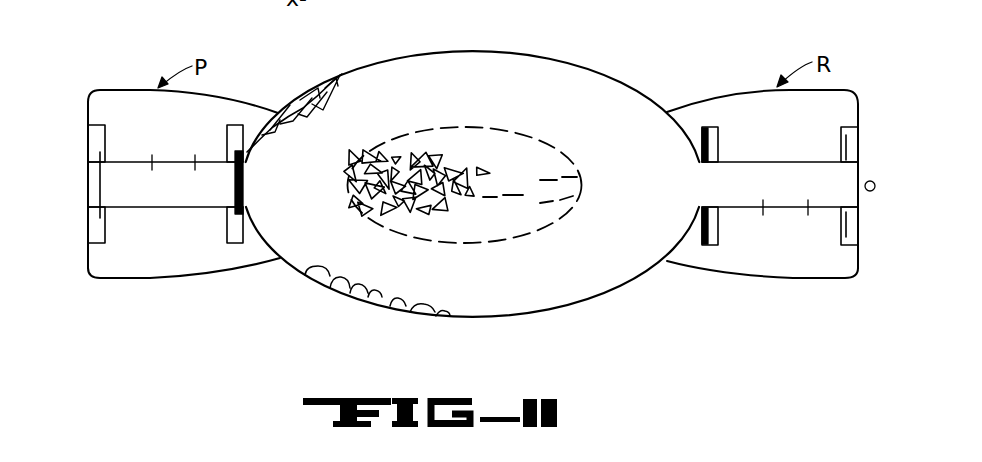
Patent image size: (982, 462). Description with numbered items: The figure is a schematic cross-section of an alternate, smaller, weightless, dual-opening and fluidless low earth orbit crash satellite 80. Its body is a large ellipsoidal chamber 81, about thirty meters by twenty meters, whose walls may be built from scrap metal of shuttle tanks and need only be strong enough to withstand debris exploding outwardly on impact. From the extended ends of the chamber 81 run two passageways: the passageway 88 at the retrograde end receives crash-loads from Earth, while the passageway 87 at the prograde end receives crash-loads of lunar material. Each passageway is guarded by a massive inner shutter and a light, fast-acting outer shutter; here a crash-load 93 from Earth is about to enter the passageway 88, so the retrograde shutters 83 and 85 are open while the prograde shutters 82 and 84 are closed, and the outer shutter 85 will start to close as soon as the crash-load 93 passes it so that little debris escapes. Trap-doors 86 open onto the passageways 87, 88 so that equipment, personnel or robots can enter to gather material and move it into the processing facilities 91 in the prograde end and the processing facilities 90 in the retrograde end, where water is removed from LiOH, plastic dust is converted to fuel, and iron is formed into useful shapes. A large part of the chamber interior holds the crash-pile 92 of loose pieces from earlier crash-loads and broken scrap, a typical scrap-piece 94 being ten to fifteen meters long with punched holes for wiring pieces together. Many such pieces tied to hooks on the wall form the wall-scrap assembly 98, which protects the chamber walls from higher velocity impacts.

The low earth orbit crash satellite 80 is at (493, 49).
The ellipsoidal chamber 81 is at (512, 100).
The inner shutter 82 is at (246, 184).
The inner shutter 83 is at (712, 145).
The outer shutter 84 is at (97, 183).
The outer shutter 85 is at (859, 146).
The trap-doors 86 is at (178, 160).
The passageway 87 is at (190, 196).
The passageway 88 is at (800, 195).
The processing facilities 90 is at (833, 264).
The processing facilities 91 is at (170, 258).
The crash-pile 92 is at (442, 216).
The crash-load 93 is at (875, 189).
The scrap-piece 94 is at (440, 174).
The wall-scrap assembly 98 is at (315, 113).